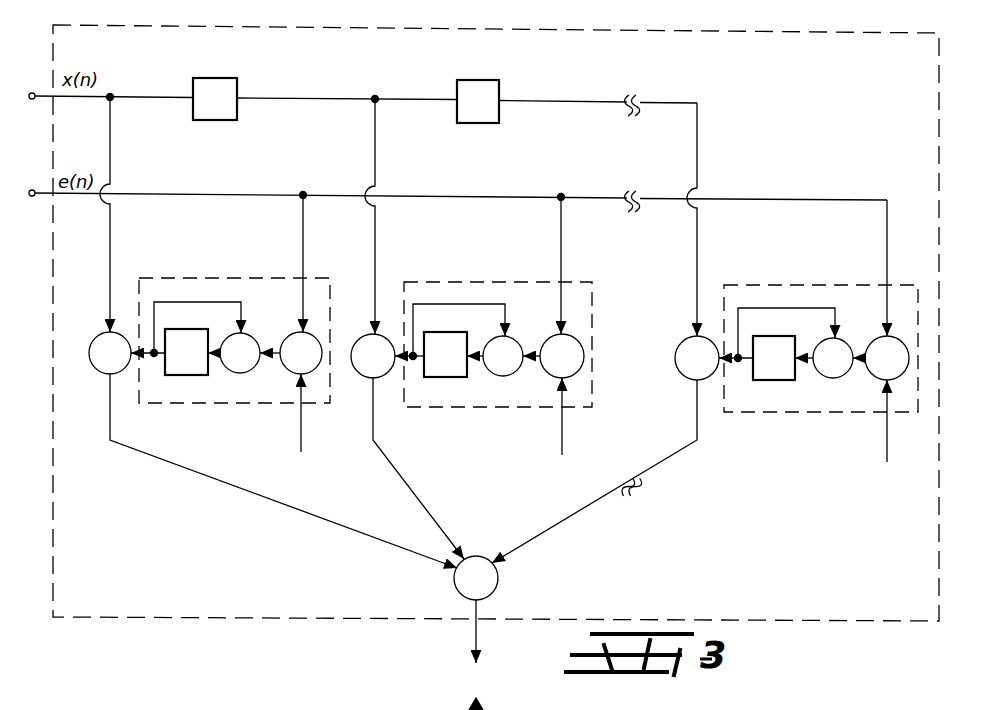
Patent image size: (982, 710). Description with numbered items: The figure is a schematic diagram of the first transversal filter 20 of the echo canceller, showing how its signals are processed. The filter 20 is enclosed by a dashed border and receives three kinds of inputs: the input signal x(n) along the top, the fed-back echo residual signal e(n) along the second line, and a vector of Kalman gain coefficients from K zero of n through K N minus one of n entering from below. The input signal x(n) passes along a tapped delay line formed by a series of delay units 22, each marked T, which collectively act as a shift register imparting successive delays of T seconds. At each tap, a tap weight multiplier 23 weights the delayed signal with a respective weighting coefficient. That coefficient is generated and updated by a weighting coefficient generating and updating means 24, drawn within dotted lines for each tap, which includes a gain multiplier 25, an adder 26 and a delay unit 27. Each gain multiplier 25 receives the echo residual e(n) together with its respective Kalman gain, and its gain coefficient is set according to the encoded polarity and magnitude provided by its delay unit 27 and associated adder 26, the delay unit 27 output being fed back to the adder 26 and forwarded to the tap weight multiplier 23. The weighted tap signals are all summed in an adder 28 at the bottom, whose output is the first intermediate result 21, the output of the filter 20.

The transversal filter 20 is at (242, 617).
The first intermediate result 21 is at (480, 604).
The delay unit 22 is at (355, 81).
The tap weight multiplier 23 is at (434, 334).
The weighting coefficient generating and updating means 24 is at (528, 377).
The gain multiplier 25 is at (616, 330).
The adder 26 is at (531, 303).
The delay unit 27 is at (483, 315).
The adder 28 is at (454, 586).